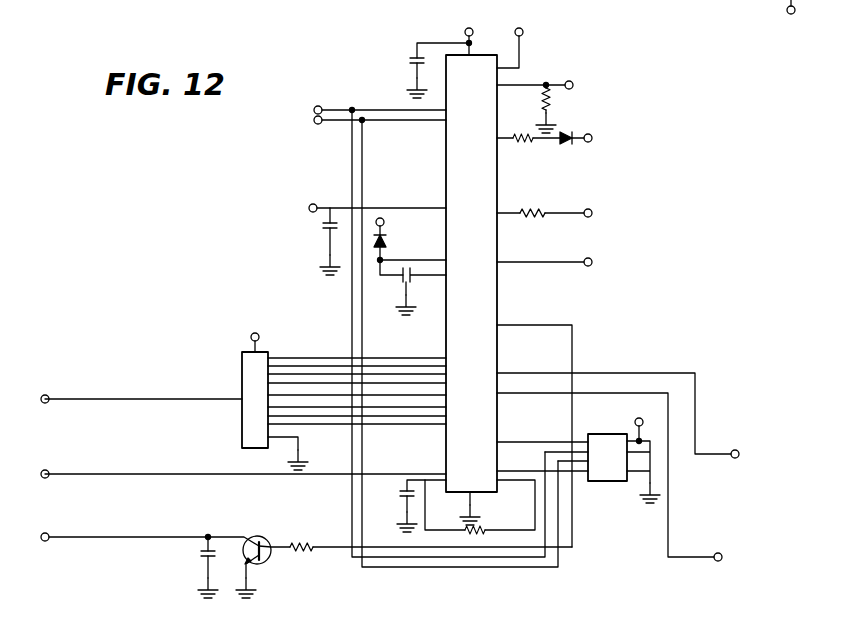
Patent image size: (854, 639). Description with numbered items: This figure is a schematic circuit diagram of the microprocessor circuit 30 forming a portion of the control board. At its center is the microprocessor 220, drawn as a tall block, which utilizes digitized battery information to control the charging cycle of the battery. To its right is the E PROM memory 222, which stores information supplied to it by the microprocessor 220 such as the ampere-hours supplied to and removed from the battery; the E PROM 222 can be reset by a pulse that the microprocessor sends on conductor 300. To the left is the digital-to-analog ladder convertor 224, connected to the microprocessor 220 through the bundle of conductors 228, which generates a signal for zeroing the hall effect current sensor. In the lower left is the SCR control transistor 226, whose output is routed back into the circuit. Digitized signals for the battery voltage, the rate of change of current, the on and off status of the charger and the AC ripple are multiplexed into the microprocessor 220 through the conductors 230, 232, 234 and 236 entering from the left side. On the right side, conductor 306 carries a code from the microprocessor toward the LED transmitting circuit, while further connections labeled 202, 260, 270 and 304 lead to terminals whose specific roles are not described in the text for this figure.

The microprocessor circuit 30 is at (446, 25).
The terminal connection 202 is at (670, 0).
The microprocessor 220 is at (481, 198).
The E PROM memory 222 is at (620, 470).
The digital-to-analog ladder convertor 224 is at (254, 372).
The SCR control transistor 226 is at (264, 559).
The conductors 228 is at (414, 331).
The conductor 230 is at (379, 108).
The conductor 232 is at (420, 122).
The conductor 234 is at (422, 207).
The conductor 236 is at (422, 258).
The output diode 260 is at (578, 135).
The supply input 270 is at (519, 59).
The conductor 300 is at (538, 85).
The output resistor 304 is at (565, 212).
The conductor 306 is at (553, 262).